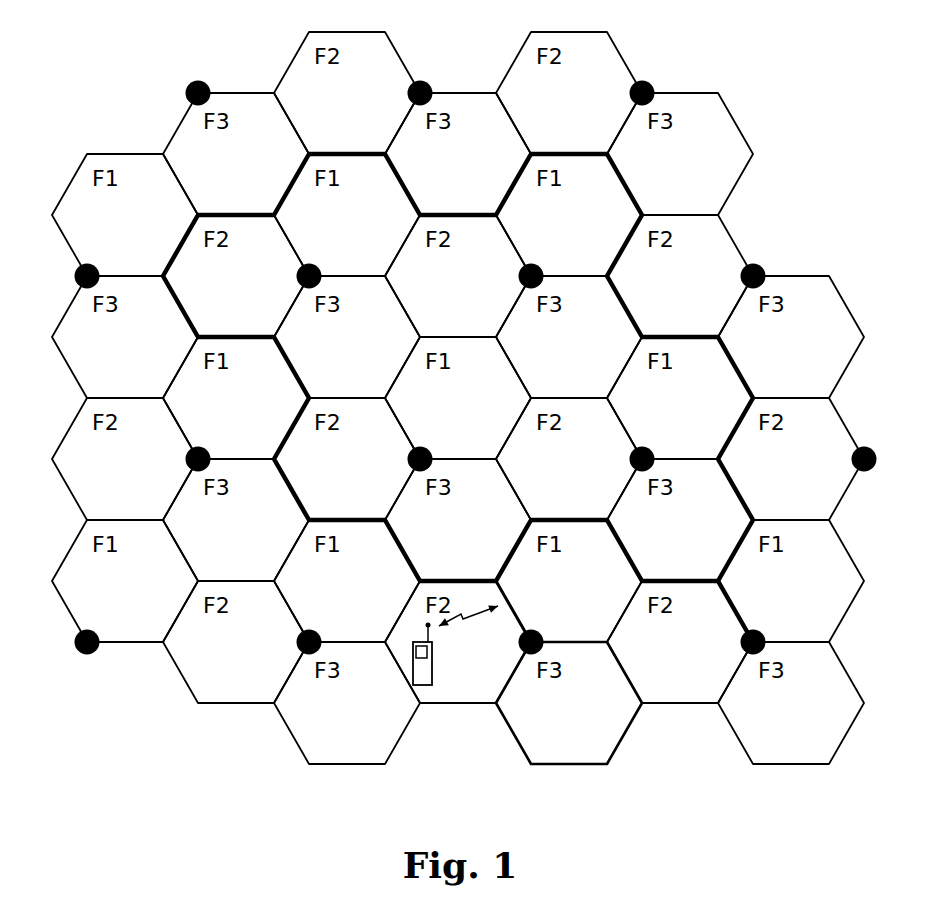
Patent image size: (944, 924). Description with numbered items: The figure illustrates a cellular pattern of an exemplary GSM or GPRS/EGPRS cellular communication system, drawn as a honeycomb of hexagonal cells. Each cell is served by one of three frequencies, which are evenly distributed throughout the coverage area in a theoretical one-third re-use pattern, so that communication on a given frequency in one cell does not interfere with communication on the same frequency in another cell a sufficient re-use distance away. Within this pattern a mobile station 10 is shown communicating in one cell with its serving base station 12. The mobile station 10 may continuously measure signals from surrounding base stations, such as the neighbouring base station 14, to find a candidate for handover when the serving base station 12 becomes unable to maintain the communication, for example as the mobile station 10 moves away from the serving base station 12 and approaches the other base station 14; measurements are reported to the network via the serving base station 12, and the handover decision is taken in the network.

The mobile station 10 is at (435, 673).
The base station 12 is at (540, 647).
The base station 14 is at (297, 645).